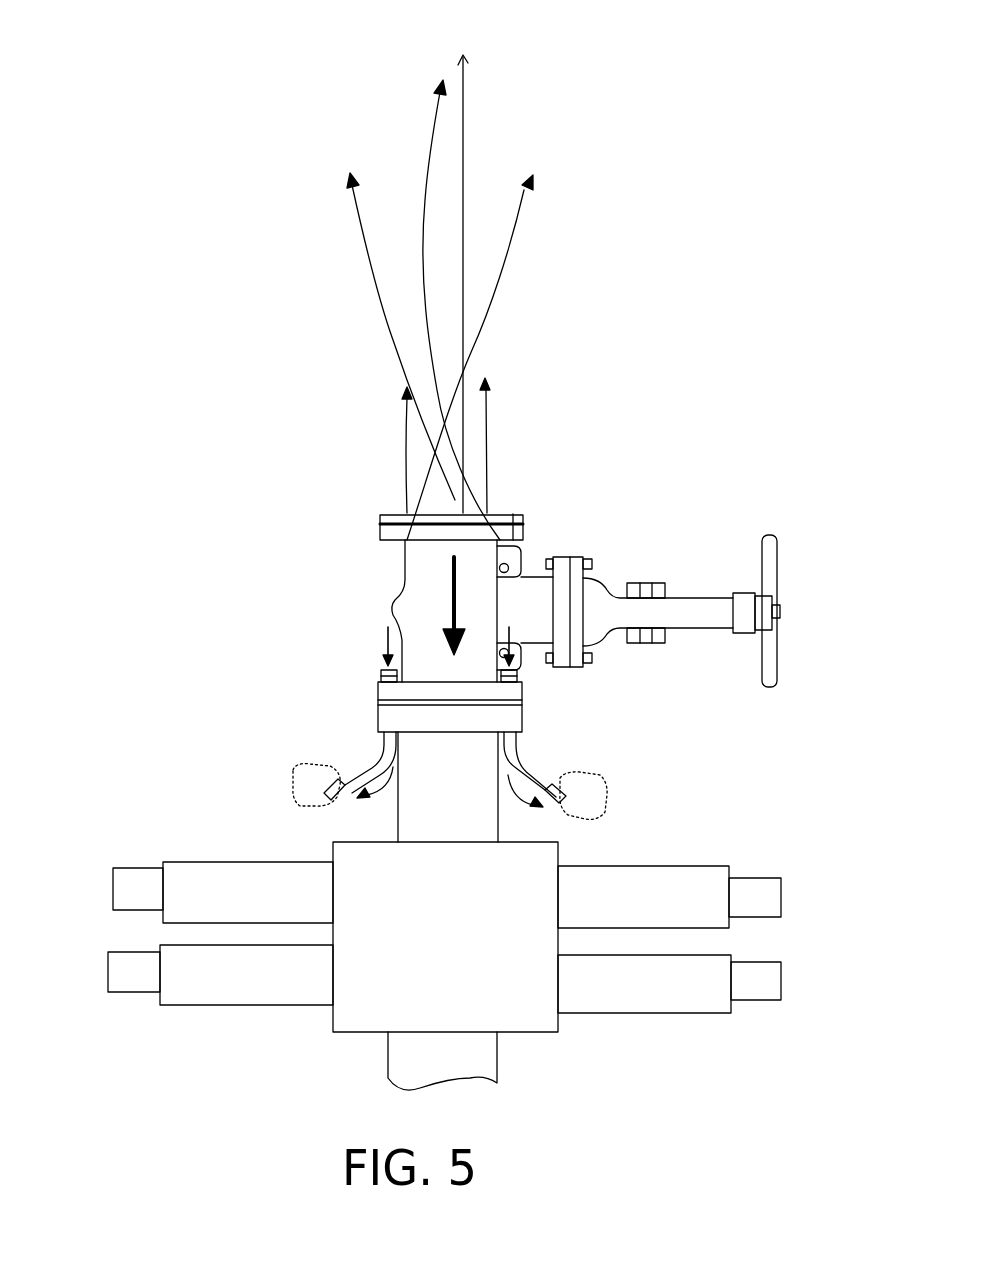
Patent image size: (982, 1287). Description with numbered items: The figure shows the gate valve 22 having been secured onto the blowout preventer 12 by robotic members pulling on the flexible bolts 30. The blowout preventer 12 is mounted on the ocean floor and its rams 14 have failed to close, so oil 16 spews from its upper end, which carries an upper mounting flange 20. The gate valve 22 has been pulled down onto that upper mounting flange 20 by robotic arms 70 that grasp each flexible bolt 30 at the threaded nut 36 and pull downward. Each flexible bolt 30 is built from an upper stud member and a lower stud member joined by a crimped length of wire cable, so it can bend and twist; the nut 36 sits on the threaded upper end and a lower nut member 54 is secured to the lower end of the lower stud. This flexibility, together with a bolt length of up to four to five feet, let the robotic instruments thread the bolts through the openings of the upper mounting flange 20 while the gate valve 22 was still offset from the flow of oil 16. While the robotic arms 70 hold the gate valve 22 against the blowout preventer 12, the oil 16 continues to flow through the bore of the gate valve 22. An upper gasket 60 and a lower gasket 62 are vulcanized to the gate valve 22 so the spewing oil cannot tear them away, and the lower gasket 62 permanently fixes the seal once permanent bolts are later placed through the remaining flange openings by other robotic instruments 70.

The blowout preventer 12 is at (529, 878).
The rams 14 is at (220, 990).
The oil 16 is at (438, 352).
The upper mounting flange 20 is at (393, 720).
The gate valve 22 is at (380, 553).
The flexible bolt 30 is at (511, 753).
The nut 36 is at (378, 670).
The lower nut member 54 is at (327, 790).
The upper gasket 60 is at (513, 514).
The lower gasket 62 is at (382, 700).
The robotic arms 70 is at (300, 780).